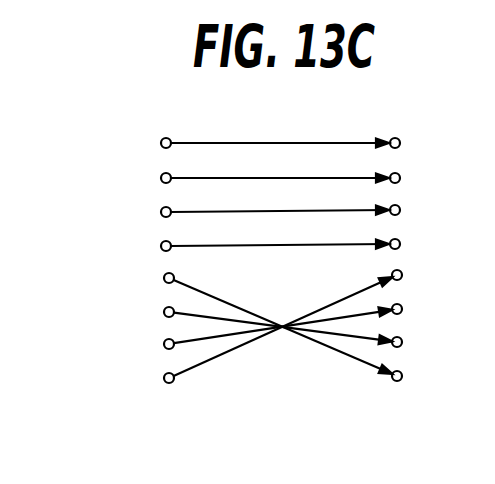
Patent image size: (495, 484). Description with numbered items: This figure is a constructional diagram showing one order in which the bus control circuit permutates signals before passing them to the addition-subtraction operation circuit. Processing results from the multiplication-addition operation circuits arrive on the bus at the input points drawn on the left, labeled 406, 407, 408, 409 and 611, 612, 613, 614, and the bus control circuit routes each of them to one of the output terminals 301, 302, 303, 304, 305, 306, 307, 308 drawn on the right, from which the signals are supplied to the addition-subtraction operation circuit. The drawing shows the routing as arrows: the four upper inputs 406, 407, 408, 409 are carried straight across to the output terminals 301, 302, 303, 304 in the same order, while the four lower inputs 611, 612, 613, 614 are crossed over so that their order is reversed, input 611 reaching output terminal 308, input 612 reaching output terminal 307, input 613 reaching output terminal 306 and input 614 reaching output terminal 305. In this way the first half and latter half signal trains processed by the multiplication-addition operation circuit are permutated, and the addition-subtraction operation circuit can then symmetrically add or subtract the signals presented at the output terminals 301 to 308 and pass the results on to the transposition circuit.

The input node 406 is at (161, 143).
The input node 407 is at (161, 178).
The input node 408 is at (161, 212).
The input node 409 is at (161, 246).
The input node 611 is at (164, 278).
The input node 612 is at (164, 312).
The input node 613 is at (164, 344).
The input node 614 is at (164, 378).
The output terminal 301 is at (400, 140).
The output terminal 302 is at (400, 175).
The output terminal 303 is at (400, 207).
The output terminal 304 is at (400, 241).
The output terminal 305 is at (402, 272).
The output terminal 306 is at (402, 306).
The output terminal 307 is at (402, 339).
The output terminal 308 is at (402, 373).